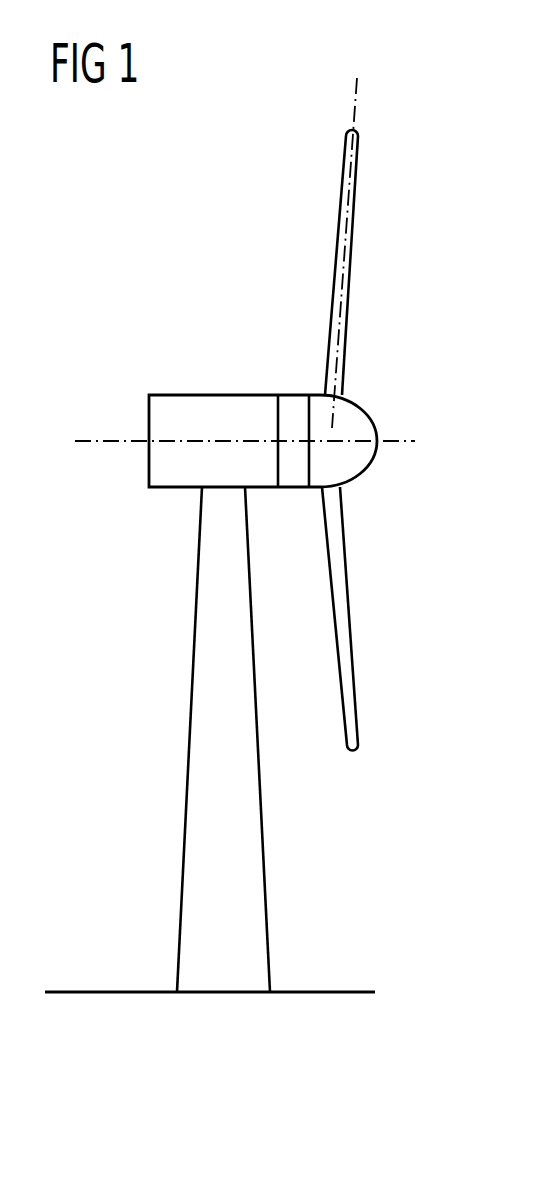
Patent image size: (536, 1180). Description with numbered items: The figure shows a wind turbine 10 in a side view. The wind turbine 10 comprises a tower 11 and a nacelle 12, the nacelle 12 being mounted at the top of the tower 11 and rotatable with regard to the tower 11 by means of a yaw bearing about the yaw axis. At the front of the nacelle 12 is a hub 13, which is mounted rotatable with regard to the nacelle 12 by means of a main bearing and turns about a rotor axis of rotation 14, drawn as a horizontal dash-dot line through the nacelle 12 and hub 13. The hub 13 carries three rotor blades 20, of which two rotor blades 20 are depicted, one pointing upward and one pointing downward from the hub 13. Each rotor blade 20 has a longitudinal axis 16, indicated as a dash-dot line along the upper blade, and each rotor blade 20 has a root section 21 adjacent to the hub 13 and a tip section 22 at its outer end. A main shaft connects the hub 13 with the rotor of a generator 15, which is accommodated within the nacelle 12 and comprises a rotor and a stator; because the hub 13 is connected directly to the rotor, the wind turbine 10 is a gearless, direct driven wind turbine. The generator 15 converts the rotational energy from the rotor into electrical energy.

The wind turbine 10 is at (120, 626).
The tower 11 is at (243, 823).
The nacelle 12 is at (200, 393).
The hub 13 is at (373, 417).
The rotor axis of rotation 14 is at (90, 440).
The generator 15 is at (297, 475).
The longitudinal axis 16 is at (350, 94).
The rotor blade 20 is at (348, 262).
The root section 21 is at (347, 365).
The tip section 22 is at (357, 142).